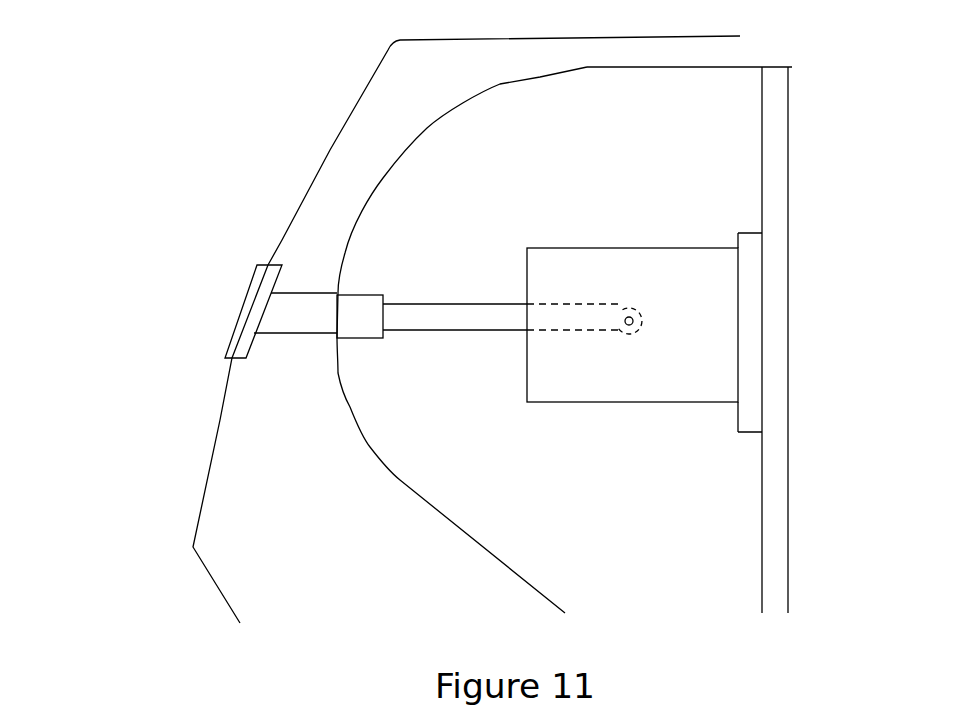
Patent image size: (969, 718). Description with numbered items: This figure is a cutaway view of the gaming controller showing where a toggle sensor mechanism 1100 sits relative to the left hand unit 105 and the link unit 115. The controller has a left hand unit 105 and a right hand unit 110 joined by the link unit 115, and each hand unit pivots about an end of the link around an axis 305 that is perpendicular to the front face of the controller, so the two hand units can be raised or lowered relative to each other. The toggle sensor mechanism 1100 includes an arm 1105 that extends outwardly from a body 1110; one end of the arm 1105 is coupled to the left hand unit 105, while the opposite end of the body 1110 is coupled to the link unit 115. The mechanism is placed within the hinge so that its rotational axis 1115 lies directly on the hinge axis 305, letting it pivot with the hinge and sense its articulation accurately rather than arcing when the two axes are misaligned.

The right hand unit 110 is at (198, 87).
The left hand unit 105 is at (213, 432).
The link unit 115 is at (787, 453).
The toggle sensor mechanism 1100 is at (510, 228).
The arm 1105 is at (462, 312).
The body 1110 is at (630, 248).
The rotational axis 1115 is at (634, 300).
The axis 305 is at (625, 332).